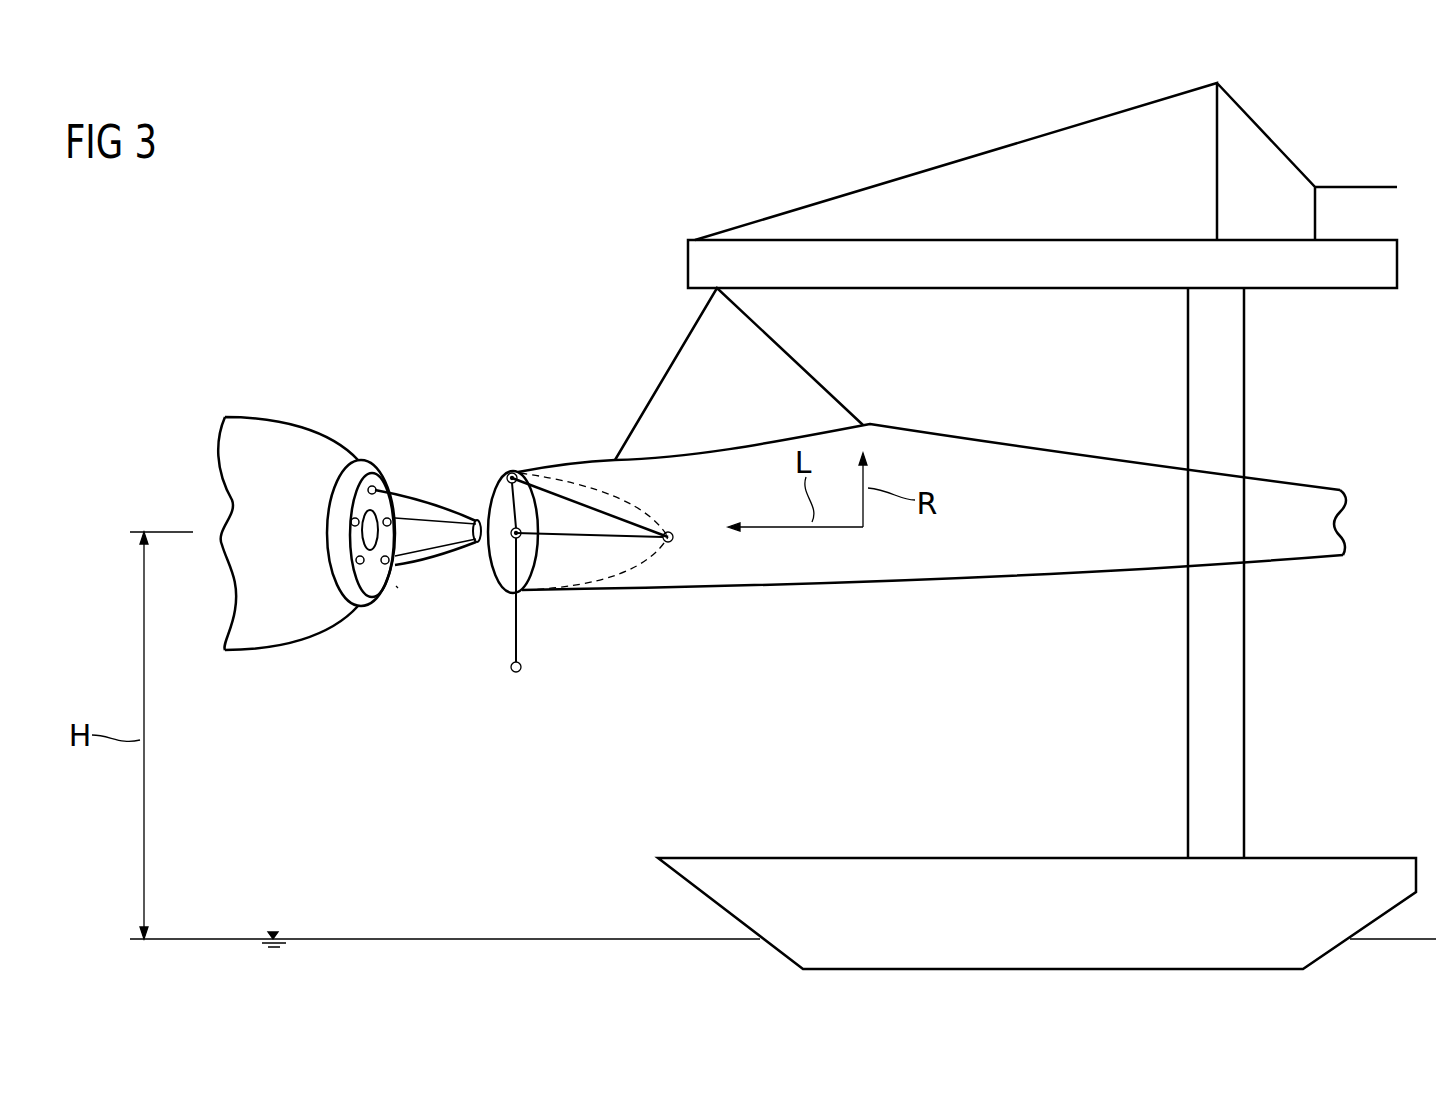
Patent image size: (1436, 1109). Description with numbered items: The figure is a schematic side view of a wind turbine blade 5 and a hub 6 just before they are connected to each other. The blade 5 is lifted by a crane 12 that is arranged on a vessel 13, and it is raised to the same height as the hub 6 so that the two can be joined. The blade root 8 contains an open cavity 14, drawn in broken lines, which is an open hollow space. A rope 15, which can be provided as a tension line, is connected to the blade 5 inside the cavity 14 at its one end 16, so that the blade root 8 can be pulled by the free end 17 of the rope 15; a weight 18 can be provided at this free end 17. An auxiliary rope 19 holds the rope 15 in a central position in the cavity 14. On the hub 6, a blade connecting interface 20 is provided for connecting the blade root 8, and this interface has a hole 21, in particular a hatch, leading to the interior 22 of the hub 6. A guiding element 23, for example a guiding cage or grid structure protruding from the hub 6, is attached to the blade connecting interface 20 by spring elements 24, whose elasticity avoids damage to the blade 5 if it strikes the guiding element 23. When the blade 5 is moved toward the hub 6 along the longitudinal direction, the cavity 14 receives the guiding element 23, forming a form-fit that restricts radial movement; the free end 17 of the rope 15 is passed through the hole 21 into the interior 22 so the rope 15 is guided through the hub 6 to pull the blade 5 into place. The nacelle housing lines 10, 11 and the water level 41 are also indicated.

The blade 5 is at (932, 500).
The hub 6 is at (268, 398).
The blade root 8 is at (516, 462).
The nacelle housing bottom 10 is at (800, 590).
The nacelle housing top 11 is at (898, 428).
The crane 12 is at (905, 165).
The vessel 13 is at (887, 857).
The open cavity 14 is at (587, 490).
The rope 15 is at (530, 620).
The one end of the rope 16 is at (666, 545).
The free end of the rope 17 is at (511, 667).
The weight 18 is at (523, 667).
The auxiliary rope 19 is at (507, 476).
The blade connecting interface 20 is at (367, 523).
The hole 21 is at (375, 553).
The interior of the hub 22 is at (391, 544).
The guiding element 23 is at (406, 596).
The spring elements 24 is at (368, 489).
The water surface 41 is at (447, 939).